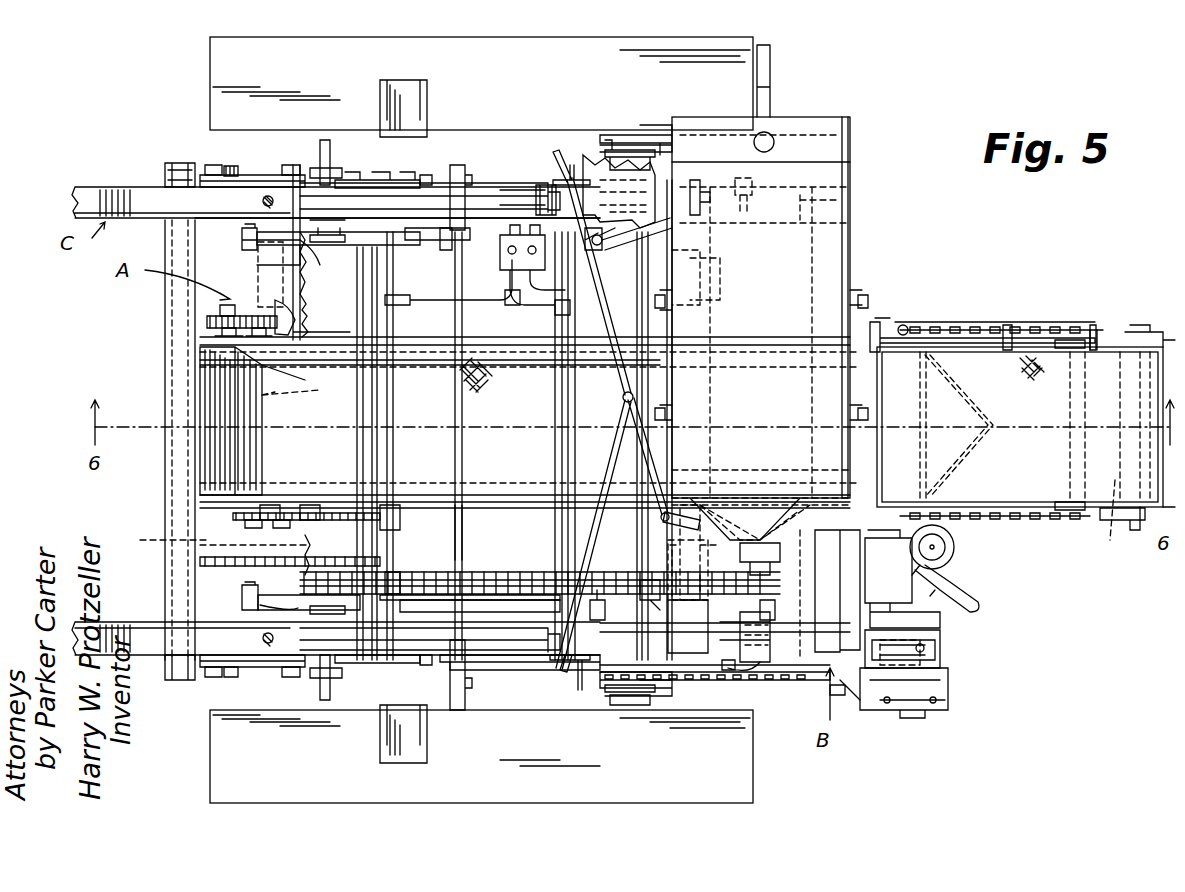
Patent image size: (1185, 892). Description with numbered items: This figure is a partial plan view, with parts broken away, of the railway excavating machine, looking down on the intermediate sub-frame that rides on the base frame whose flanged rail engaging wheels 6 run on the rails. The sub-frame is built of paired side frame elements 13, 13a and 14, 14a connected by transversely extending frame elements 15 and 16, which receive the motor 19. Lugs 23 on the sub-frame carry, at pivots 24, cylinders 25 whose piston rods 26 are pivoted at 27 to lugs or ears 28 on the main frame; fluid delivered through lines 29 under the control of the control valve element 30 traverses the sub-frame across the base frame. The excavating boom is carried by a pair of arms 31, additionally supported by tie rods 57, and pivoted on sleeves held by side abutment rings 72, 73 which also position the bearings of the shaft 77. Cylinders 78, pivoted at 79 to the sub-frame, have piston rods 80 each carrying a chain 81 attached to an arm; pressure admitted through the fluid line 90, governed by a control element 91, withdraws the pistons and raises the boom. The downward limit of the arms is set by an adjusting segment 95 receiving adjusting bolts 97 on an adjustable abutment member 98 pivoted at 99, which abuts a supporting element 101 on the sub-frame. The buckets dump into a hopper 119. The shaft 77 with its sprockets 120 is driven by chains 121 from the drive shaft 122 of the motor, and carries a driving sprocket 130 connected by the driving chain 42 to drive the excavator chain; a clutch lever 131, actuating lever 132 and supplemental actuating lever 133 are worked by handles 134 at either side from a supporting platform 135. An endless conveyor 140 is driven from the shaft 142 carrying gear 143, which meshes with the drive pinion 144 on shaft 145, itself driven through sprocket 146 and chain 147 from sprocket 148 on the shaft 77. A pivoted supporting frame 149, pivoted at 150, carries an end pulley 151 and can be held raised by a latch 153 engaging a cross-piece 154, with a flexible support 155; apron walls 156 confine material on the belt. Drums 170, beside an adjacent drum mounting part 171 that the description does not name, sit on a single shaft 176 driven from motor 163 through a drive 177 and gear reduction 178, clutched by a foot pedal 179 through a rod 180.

The flanged rail engaging wheels 6 is at (720, 278).
The side frame element 13 is at (495, 180).
The side frame element 13a is at (450, 243).
The side frame element 14 is at (497, 670).
The side frame element 14a is at (715, 672).
The transversely extending frame element 15 is at (818, 600).
The transversely extending frame element 16 is at (698, 653).
The motor 19 is at (830, 282).
The lugs 23 is at (605, 600).
The pivot 24 is at (625, 250).
The cylinders 25 is at (432, 242).
The piston rods 26 is at (305, 245).
The pivot 27 is at (255, 258).
The lugs or ears 28 is at (240, 240).
The lines 29 is at (387, 272).
The control valve element 30 is at (505, 250).
The arms 31 is at (92, 188).
The driving chain 42 is at (215, 557).
The tie rods 57 is at (262, 203).
The side abutment ring 72 is at (327, 417).
The side abutment ring 73 is at (412, 178).
The shaft 77 is at (357, 400).
The cylinders 78 is at (660, 212).
The pivot 79 is at (745, 180).
The piston rods 80 is at (515, 192).
The chain 81 is at (345, 180).
The fluid line 90 is at (553, 410).
The control element 91 is at (540, 190).
The adjusting segment 95 is at (255, 176).
The adjusting bolt 97 is at (292, 165).
The adjustable abutment member 98 is at (230, 168).
The pivot 99 is at (210, 165).
The supporting element 101 is at (225, 175).
The hopper 119 is at (205, 395).
The sprockets 120 is at (400, 574).
The chains or driving members 121 is at (490, 580).
The drive shaft 122 is at (775, 562).
The driving sprocket 130 is at (335, 560).
The clutch lever 131 is at (740, 510).
The actuating lever 132 is at (622, 372).
The supplemental actuating lever 133 is at (622, 448).
The handles 134 is at (560, 150).
The supporting platform 135 is at (210, 82).
The endless conveyor 140 is at (1100, 370).
The shaft 142 is at (222, 310).
The gear 143 is at (205, 320).
The drive pinion 144 is at (285, 315).
The shaft 145 is at (300, 392).
The sprocket 146 is at (240, 517).
The chain 147 is at (312, 505).
The sprocket 148 is at (388, 515).
The pivoted supporting frame 149 is at (1096, 340).
The pivot 150 is at (885, 412).
The end pulley 151 is at (1117, 522).
The latch 153 is at (893, 326).
The cross-piece 154 is at (1006, 325).
The flexible support 155 is at (1038, 326).
The apron walls 156 is at (427, 355).
The motor 163 is at (900, 578).
The drums 170 is at (660, 138).
The bracket 171 is at (620, 148).
The shaft 176 is at (640, 548).
The drive 177 is at (802, 688).
The gear reduction 178 is at (915, 660).
The foot pedal 179 is at (380, 80).
The rod 180 is at (460, 522).